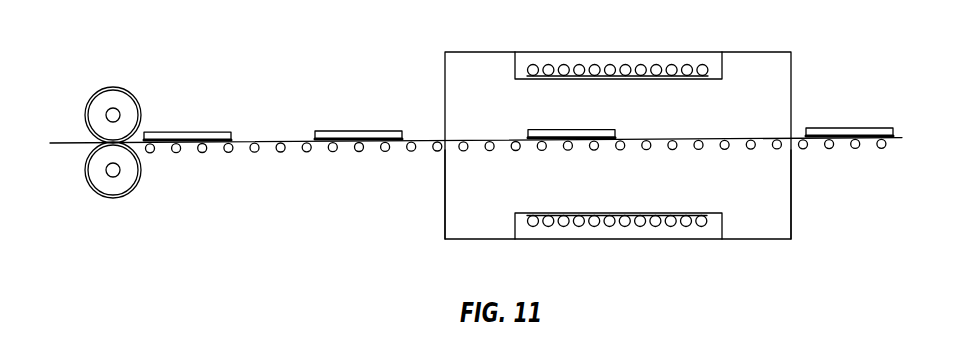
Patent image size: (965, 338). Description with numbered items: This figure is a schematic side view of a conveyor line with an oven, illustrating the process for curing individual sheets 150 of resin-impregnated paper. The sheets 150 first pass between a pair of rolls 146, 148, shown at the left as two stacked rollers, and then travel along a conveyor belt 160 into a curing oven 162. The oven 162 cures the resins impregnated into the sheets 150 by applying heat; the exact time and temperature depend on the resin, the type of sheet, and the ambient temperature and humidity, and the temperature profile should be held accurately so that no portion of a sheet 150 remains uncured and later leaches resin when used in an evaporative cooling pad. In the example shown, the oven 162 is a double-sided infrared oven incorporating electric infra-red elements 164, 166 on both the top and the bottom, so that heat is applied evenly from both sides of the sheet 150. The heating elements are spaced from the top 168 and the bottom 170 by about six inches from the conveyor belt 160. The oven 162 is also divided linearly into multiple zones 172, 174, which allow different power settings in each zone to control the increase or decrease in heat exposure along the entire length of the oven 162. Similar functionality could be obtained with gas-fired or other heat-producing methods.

The roll 146 is at (115, 89).
The roll 148 is at (115, 196).
The sheet of impregnated paper 150 is at (180, 129).
The conveyor belt 160 is at (267, 140).
The curing oven 162 is at (755, 50).
The infra-red element 164 is at (532, 67).
The infra-red element 166 is at (673, 213).
The top 168 is at (508, 123).
The bottom 170 is at (495, 218).
The zone 172 is at (452, 182).
The zone 174 is at (783, 208).